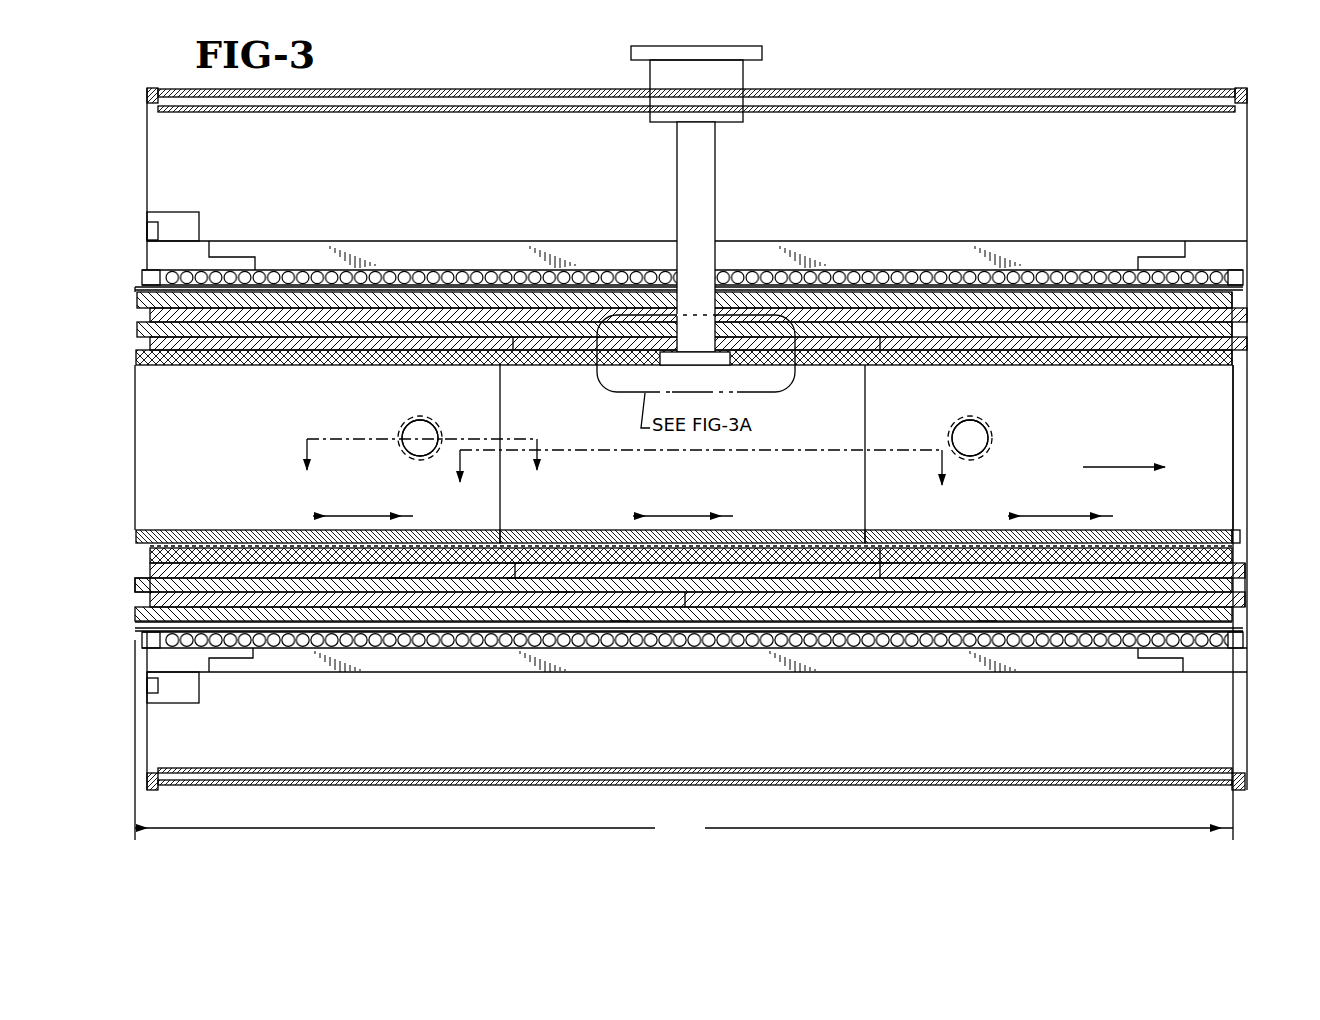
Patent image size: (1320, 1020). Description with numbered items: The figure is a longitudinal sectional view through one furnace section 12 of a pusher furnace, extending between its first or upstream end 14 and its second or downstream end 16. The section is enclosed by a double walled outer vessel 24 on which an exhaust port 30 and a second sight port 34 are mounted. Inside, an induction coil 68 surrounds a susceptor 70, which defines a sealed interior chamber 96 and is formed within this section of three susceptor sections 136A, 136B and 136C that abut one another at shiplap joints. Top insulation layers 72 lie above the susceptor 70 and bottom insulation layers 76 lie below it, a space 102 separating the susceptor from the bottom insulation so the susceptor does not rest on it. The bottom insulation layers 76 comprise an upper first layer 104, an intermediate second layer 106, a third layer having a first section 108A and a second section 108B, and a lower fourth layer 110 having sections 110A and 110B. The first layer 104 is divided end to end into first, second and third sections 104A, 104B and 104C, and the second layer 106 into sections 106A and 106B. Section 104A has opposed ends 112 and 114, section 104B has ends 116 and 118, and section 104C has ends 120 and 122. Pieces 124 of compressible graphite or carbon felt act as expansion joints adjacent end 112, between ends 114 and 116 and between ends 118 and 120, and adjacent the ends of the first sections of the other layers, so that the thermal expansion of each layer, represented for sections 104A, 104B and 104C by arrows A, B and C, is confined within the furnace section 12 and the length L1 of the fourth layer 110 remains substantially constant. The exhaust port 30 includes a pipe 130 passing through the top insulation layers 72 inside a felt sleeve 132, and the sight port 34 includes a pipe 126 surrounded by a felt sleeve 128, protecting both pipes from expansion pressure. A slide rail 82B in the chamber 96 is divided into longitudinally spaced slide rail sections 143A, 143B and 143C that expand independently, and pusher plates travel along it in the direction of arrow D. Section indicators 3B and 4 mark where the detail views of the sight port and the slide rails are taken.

The furnace section 12 is at (968, 82).
The first end 14 is at (147, 128).
The second end 16 is at (1247, 158).
The double walled outer vessel 24 is at (505, 88).
The exhaust port 30 is at (768, 52).
The pipe 130 is at (708, 170).
The sleeve of felt 132 is at (718, 327).
The induction coil 68 is at (850, 270).
The pieces of felt 124 is at (143, 297).
The top insulation layers 72 is at (1250, 320).
The susceptor 70 is at (1195, 415).
The interior chamber 96 is at (175, 388).
The susceptor section 136A is at (245, 368).
The susceptor section 136B is at (578, 370).
The susceptor section 136C is at (1130, 370).
The second sight port 34 is at (412, 420).
The pipe 126 is at (427, 418).
The sleeve 128 is at (402, 432).
The section line 3B- 3B is at (421, 469).
The section line 4- 4 is at (701, 482).
The arrow A is at (363, 503).
The arrow B is at (683, 503).
The arrow C is at (1060, 503).
The arrow D is at (1124, 454).
The first slide rail section 143A is at (210, 530).
The second slide rail section 143B is at (603, 530).
The third slide rail section 143C is at (905, 530).
The slide rail 82B is at (1197, 530).
The space 102 is at (175, 565).
The upper first layer 104 is at (250, 580).
The intermediate second layer 106 is at (290, 590).
The first section of third layer 108A is at (585, 603).
The lower fourth layer 110 is at (348, 622).
The first end 112 is at (145, 570).
The second end 122 is at (1248, 576).
The first section 104A is at (400, 578).
The second section 104B is at (772, 577).
The third section 104C is at (1120, 578).
The first section 106A is at (560, 590).
The second section 106B is at (828, 590).
The second section of third layer 108B is at (1030, 605).
The first section 110A is at (620, 617).
The second section 110B is at (987, 617).
The second end 114 is at (513, 565).
The first end 116 is at (517, 578).
The second end 118 is at (880, 573).
The first end 120 is at (913, 577).
The bottom insulation layers 76 is at (1250, 615).
The length L1 is at (684, 685).